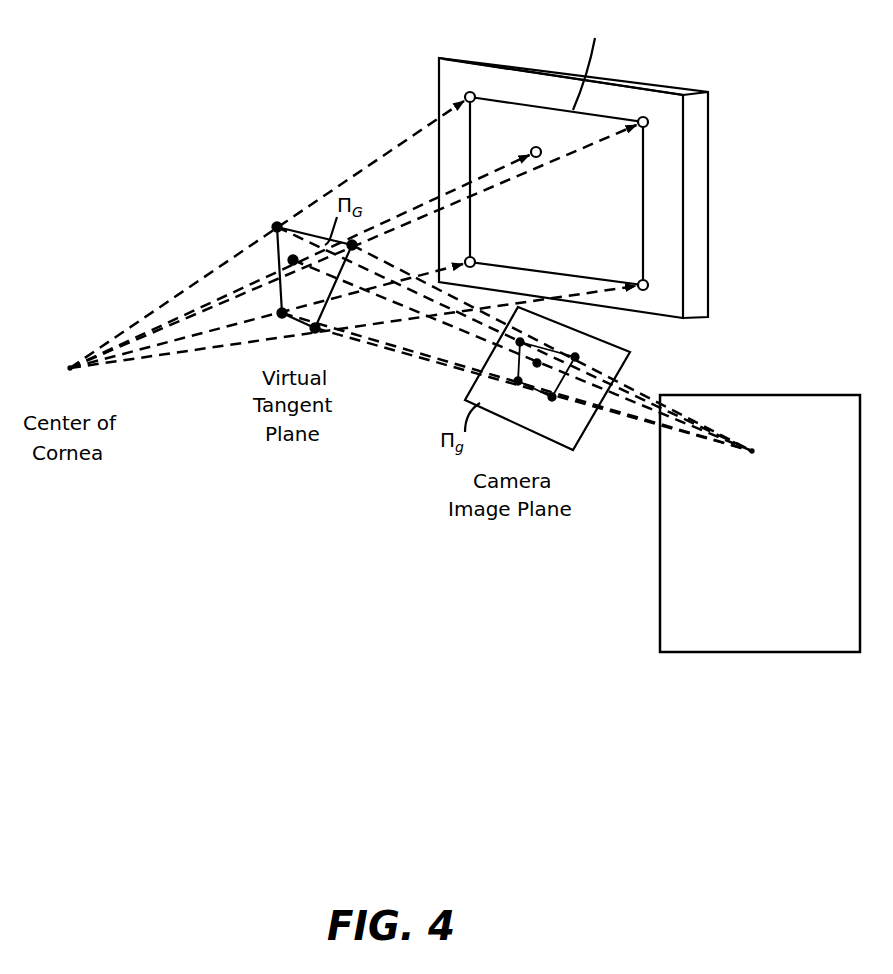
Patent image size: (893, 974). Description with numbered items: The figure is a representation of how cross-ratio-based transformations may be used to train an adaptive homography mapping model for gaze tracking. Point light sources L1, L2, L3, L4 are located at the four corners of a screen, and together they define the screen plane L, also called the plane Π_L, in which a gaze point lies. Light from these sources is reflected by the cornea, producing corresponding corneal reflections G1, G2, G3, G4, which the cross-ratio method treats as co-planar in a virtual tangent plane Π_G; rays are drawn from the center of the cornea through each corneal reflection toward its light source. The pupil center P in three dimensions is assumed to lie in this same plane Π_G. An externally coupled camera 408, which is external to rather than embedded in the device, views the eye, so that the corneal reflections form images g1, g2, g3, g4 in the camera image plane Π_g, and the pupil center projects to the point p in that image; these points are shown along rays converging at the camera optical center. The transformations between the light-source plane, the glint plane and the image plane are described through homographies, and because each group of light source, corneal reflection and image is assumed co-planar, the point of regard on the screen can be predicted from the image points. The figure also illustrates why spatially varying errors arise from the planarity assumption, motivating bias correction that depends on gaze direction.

The camera 408 is at (687, 582).
The point light source plane L is at (548, 234).
The point light source L1 is at (460, 84).
The point light source L2 is at (655, 136).
The point light source L3 is at (485, 277).
The point light source L4 is at (654, 299).
The corneal reflection G1 is at (269, 212).
The corneal reflection G2 is at (377, 249).
The corneal reflection G3 is at (324, 346).
The corneal reflection G4 is at (273, 324).
The pupil center P is at (299, 274).
The image of corneal reflection g1 is at (533, 329).
The image of corneal reflection g2 is at (589, 357).
The image of corneal reflection g3 is at (559, 411).
The image of corneal reflection g4 is at (511, 394).
The projection of pupil center p is at (541, 370).